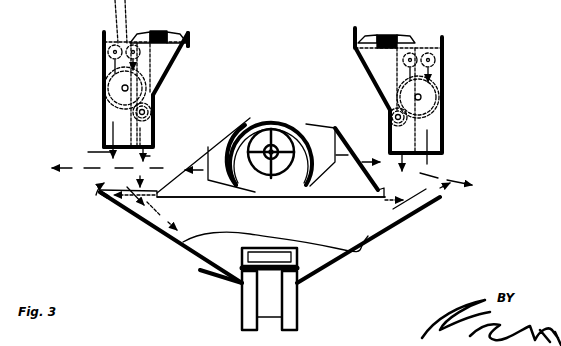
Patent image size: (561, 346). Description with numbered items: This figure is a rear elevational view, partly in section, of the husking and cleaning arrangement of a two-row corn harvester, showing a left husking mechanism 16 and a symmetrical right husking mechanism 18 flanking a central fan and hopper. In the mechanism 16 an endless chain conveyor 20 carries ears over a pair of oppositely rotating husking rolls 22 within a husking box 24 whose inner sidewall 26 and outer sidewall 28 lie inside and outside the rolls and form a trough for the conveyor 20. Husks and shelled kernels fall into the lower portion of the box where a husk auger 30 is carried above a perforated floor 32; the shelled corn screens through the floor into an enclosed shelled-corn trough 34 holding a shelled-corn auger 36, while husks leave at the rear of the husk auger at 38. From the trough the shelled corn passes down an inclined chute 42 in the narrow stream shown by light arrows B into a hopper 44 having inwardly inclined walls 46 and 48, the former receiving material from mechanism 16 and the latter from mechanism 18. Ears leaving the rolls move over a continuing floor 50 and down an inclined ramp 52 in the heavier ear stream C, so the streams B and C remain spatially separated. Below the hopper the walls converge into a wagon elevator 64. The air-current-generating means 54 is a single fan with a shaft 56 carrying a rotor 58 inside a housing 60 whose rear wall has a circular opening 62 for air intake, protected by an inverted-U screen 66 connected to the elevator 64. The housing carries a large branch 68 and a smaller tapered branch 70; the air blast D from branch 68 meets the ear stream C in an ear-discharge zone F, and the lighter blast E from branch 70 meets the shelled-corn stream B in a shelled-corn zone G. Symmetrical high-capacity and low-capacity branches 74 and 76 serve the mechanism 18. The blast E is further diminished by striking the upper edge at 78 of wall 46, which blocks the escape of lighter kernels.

The husking mechanism 16 is at (198, 41).
The second husking mechanism 18 is at (352, 44).
The endless chain conveyor 20 is at (152, 32).
The husking rolls 22 is at (126, 37).
The husking box 24 is at (100, 41).
The inner sidewall 26 is at (182, 50).
The outer sidewall 28 is at (103, 60).
The husk auger 30 is at (108, 88).
The perforated floor 32 is at (160, 100).
The shelled-corn trough 34 is at (152, 125).
The shelled-corn auger 36 is at (150, 112).
The husk discharge point 38 is at (100, 112).
The inclined chute 42 is at (156, 140).
The hopper 44 is at (221, 281).
The hopper wall 46 is at (163, 235).
The hopper wall 48 is at (381, 233).
The continuing floor 50 is at (115, 44).
The inclined ramp 52 is at (107, 119).
The air-current-generating means 54 is at (282, 107).
The rotating shaft 56 is at (278, 146).
The rotor 58 is at (296, 130).
The fan housing 60 is at (258, 110).
The circular opening 62 is at (278, 177).
The wagon elevator 64 is at (298, 312).
The screen 66 is at (248, 127).
The large air-current-directing branch 68 is at (214, 143).
The small air-current-directing branch 70 is at (199, 182).
The high-capacity branch 74 is at (337, 129).
The low-capacity branch 76 is at (393, 186).
The upper edge of hopper wall 78 is at (100, 196).
The ear stream C is at (92, 153).
The shelled-corn stream B is at (152, 155).
The air blast D is at (62, 179).
The lighter air blast E is at (89, 193).
The ear-discharge zone F is at (130, 190).
The shelled-corn zone G is at (146, 184).